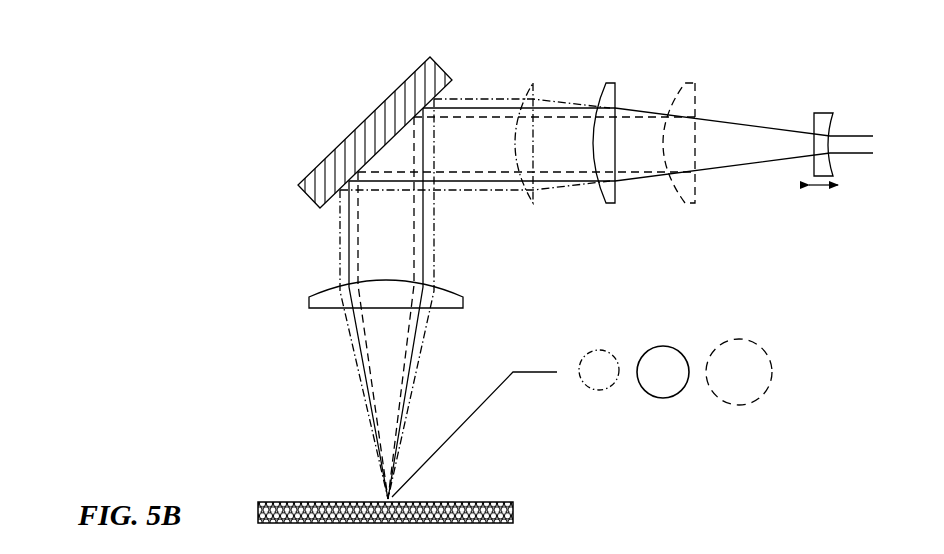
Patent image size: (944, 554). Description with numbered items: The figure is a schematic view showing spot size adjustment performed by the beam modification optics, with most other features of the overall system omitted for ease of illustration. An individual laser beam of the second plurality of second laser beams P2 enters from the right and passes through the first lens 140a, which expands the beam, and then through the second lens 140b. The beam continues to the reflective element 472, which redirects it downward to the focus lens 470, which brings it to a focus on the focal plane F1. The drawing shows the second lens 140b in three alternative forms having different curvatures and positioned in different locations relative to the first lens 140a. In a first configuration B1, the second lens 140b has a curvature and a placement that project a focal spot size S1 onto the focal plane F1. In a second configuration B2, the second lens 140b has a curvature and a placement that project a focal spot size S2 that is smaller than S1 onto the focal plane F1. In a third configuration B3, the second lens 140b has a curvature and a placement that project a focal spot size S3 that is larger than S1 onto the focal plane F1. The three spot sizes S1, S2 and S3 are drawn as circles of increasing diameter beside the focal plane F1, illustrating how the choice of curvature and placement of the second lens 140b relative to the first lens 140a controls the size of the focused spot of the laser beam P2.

The reflective element 472 is at (382, 110).
The focus lens 470 is at (455, 305).
The second lens 140b is at (530, 83).
The first lens 140a is at (826, 113).
The first configuration B1 is at (608, 227).
The second configuration B2 is at (525, 227).
The third configuration B3 is at (683, 227).
The focal spot size S1 is at (676, 346).
The focal spot size S2 is at (606, 350).
The focal spot size S3 is at (745, 339).
The second plurality of second laser beams P2 is at (854, 143).
The focal plane F1 is at (404, 514).